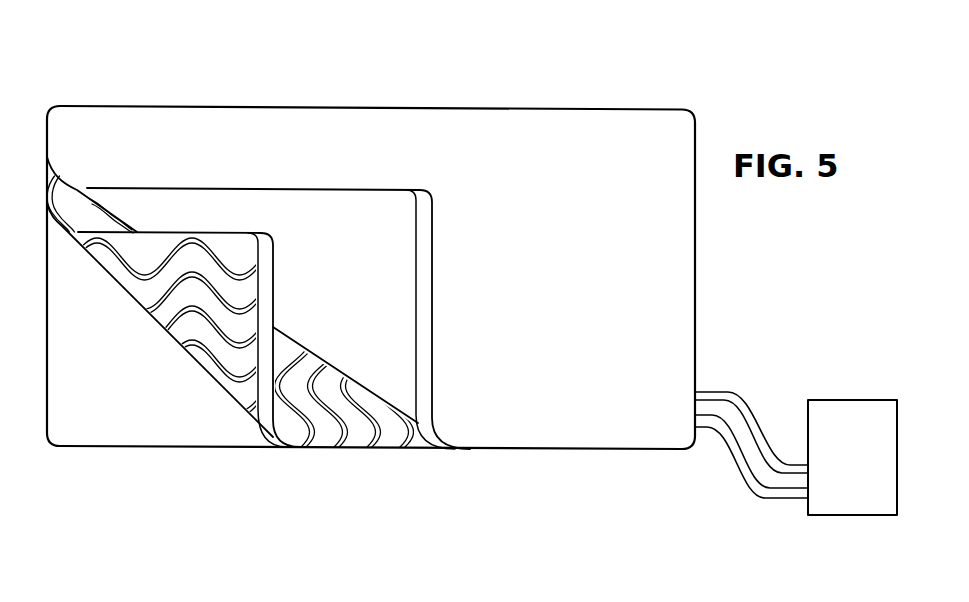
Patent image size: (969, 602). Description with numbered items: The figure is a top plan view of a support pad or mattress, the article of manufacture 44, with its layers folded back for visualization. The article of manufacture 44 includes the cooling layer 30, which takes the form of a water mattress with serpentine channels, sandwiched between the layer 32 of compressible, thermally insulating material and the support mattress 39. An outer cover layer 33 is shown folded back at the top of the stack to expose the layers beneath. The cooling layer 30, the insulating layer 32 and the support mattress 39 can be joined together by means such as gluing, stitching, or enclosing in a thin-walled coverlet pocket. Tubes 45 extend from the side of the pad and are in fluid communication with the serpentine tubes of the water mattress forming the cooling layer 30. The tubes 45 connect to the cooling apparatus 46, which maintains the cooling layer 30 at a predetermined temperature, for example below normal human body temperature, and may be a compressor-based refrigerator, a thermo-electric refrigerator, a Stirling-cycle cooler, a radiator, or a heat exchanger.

The article of manufacture 44 is at (161, 87).
The outer cover layer 33 is at (577, 123).
The layer of compressible, thermally insulating material 32 is at (428, 290).
The cooling layer 30 is at (273, 287).
The support mattress 39 is at (136, 427).
The tubes 45 is at (747, 400).
The cooling apparatus 46 is at (865, 402).